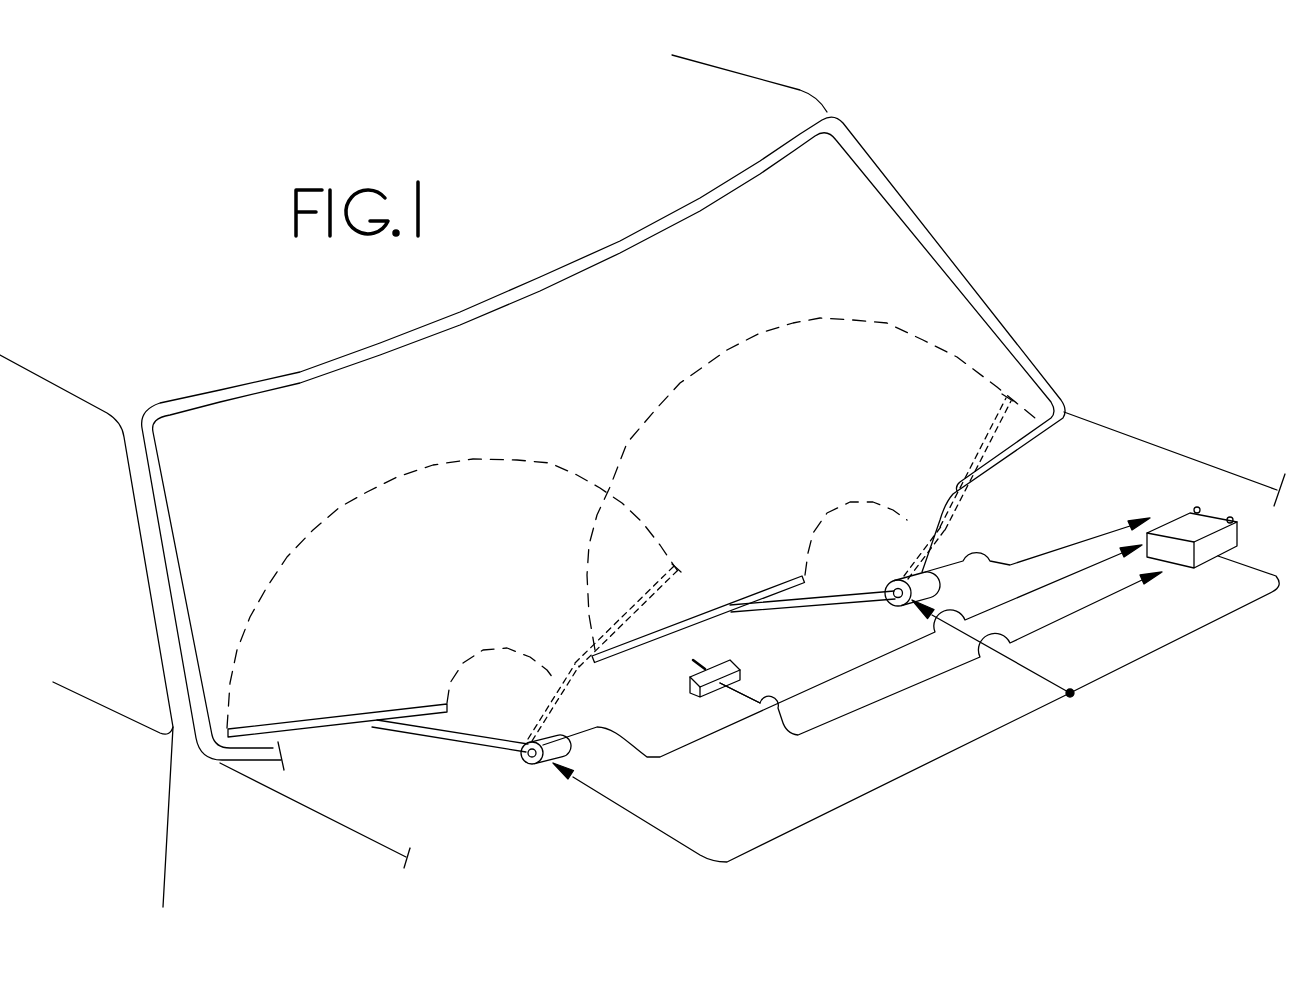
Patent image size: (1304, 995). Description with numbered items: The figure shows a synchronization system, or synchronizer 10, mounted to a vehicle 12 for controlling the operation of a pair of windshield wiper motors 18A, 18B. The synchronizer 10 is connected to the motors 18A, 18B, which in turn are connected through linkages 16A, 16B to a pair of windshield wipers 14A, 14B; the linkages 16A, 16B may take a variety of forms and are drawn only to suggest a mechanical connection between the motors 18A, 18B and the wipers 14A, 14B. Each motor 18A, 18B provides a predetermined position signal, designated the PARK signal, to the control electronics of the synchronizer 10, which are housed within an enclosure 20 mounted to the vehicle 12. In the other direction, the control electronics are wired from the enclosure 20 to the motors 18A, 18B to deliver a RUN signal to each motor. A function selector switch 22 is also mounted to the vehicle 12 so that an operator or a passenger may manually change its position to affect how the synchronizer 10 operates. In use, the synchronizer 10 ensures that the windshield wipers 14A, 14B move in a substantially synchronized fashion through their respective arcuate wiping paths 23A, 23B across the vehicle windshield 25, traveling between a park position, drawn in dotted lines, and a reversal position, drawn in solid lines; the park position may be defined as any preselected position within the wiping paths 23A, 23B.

The synchronization system 10 is at (881, 848).
The vehicle 12 is at (767, 70).
The windshield wiper 14A is at (300, 725).
The windshield wiper 14B is at (757, 598).
The linkage 16A is at (450, 738).
The linkage 16B is at (845, 603).
The windshield wiper motor 18A is at (537, 765).
The windshield wiper motor 18B is at (952, 497).
The enclosure 20 is at (1205, 528).
The function selector switch 22 is at (735, 665).
The arcuate wiping path 23A is at (357, 500).
The arcuate wiping path 23B is at (748, 343).
The vehicle windshield 25 is at (585, 362).